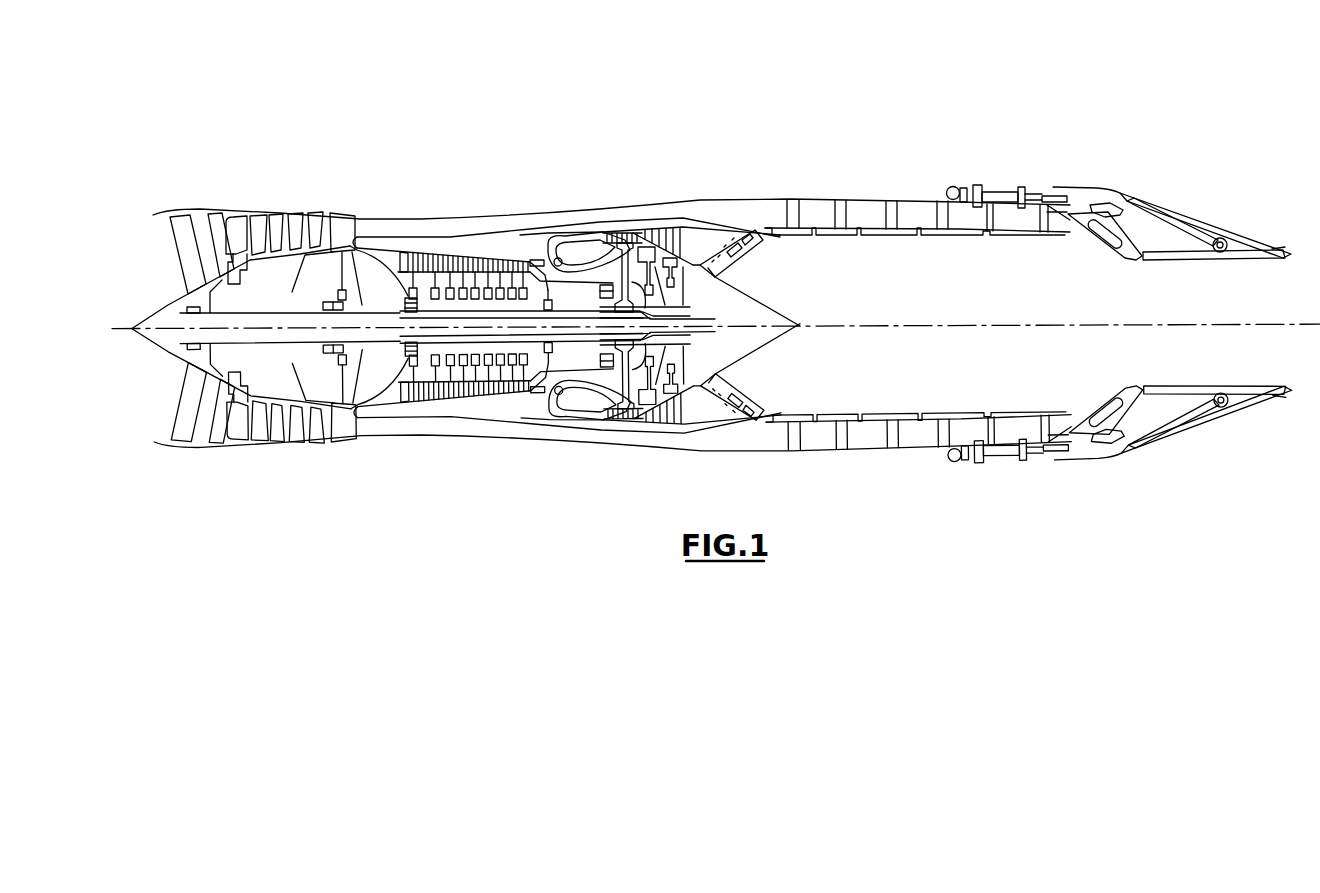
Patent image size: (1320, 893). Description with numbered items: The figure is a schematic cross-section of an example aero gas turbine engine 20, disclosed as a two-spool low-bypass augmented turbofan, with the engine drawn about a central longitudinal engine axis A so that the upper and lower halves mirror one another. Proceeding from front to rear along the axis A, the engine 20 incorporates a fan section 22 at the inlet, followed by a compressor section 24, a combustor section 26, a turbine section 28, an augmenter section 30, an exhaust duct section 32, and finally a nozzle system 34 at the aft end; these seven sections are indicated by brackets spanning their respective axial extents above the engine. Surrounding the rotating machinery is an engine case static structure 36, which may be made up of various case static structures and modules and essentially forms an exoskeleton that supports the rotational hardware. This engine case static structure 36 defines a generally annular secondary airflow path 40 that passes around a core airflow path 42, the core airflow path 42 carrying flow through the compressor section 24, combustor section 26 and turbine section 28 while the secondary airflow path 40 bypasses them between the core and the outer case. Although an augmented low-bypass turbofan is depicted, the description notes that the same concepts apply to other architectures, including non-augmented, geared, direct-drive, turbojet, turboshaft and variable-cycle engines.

The gas turbine engine 20 is at (982, 44).
The fan section 22 is at (350, 136).
The compressor section 24 is at (350, 136).
The combustor section 26 is at (550, 136).
The turbine section 28 is at (615, 136).
The augmenter section 30 is at (688, 136).
The exhaust duct section 32 is at (1043, 136).
The nozzle system 34 is at (1288, 136).
The engine case static structure 36 is at (646, 460).
The secondary airflow path 40 is at (422, 428).
The core airflow path 42 is at (343, 416).
The central longitudinal engine axis A is at (1067, 327).